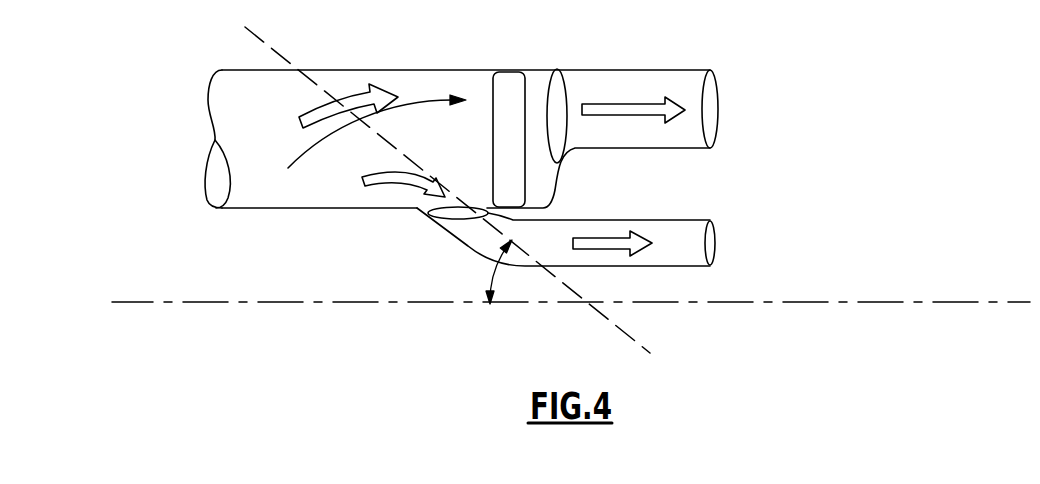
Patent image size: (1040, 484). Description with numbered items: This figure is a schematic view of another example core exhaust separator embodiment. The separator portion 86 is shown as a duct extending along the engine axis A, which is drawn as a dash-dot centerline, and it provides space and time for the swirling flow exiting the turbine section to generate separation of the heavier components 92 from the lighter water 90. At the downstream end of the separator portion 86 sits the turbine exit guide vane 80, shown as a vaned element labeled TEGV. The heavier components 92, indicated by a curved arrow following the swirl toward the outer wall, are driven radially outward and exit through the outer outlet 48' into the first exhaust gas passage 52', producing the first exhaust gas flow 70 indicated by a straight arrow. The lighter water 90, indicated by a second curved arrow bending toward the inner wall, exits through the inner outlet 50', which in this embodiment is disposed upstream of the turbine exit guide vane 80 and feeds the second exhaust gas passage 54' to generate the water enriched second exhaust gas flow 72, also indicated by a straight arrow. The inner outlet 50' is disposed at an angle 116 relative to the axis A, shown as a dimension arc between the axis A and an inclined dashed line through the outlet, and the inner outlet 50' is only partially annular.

The outer outlet 48' is at (577, 91).
The inner outlet 50' is at (440, 240).
The first exhaust gas passage 52' is at (618, 113).
The second exhaust gas passage 54' is at (573, 279).
The first exhaust gas flow 70 is at (617, 107).
The second exhaust gas flow 72 is at (607, 243).
The turbine exit guide vane (TEGV) 80 is at (513, 84).
The separator portion 86 is at (297, 196).
The water 90 is at (378, 176).
The components 92 is at (305, 118).
The angle 116 is at (493, 279).
The engine axis A is at (958, 300).